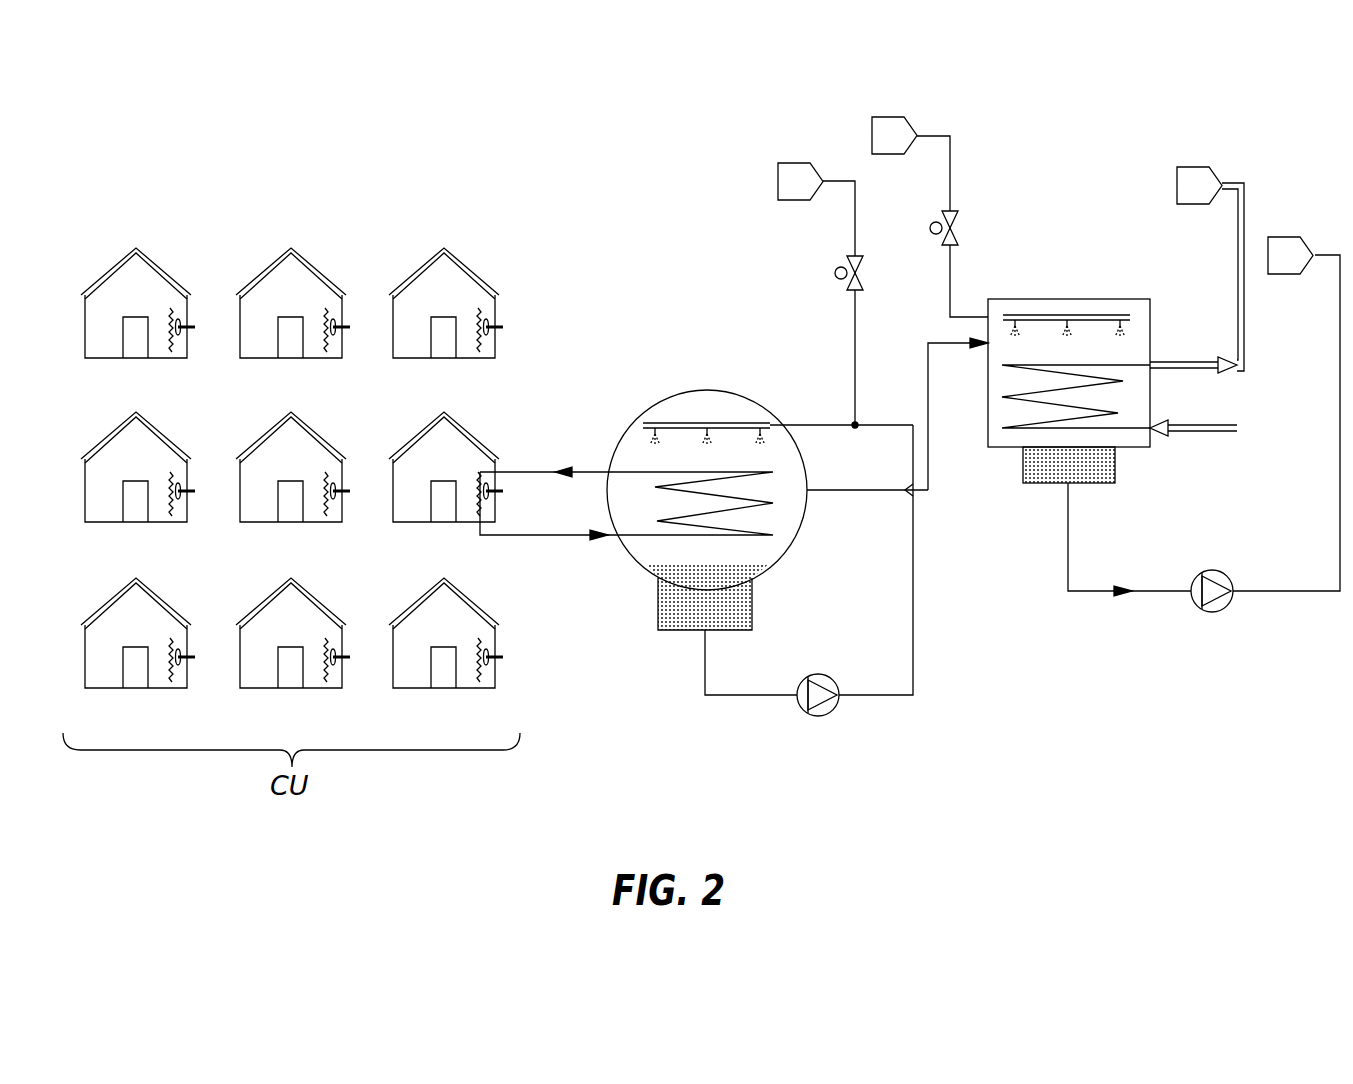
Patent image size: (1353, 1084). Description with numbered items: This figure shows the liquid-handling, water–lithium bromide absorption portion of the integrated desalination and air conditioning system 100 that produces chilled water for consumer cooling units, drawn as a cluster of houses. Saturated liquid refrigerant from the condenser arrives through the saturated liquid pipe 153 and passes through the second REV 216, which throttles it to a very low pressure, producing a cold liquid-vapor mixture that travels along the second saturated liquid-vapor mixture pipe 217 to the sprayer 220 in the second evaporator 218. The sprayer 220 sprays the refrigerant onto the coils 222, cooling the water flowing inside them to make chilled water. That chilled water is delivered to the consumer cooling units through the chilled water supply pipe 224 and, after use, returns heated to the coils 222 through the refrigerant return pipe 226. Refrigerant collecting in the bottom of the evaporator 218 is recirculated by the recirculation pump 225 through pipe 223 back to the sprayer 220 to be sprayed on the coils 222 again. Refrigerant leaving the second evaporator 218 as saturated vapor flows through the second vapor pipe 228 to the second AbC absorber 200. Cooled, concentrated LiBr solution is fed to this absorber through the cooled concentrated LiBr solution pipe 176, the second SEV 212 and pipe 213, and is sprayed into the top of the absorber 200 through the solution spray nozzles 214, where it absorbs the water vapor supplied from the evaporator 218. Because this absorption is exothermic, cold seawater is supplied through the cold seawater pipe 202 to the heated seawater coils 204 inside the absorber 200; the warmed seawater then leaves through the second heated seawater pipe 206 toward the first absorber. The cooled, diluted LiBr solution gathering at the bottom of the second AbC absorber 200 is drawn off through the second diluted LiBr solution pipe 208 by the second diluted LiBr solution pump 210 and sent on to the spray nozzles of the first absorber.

The integrated system 100 is at (302, 132).
The saturated liquid pipe 153 is at (855, 208).
The cooled concentrated LiBr solution pipe 176 is at (950, 172).
The second AbC absorber 200 is at (1150, 300).
The cold seawater pipe 202 is at (1195, 424).
The heated seawater coils 204 is at (990, 397).
The second heated seawater pipe 206 is at (1185, 360).
The second diluted LiBr solution pipe 208 is at (1068, 595).
The second diluted LiBr solution pump 210 is at (1212, 613).
The second SEV (solution expansion valve) 212 is at (962, 228).
The pipe 213 is at (950, 280).
The solution spray nozzles 214 is at (1074, 313).
The second REV 216 is at (835, 258).
The second saturated liquid-vapor mixture pipe 217 is at (858, 352).
The second evaporator 218 is at (678, 388).
The sprayer 220 is at (720, 430).
The coils 222 is at (757, 508).
The pipe 223 is at (915, 582).
The chilled water supply pipe 224 is at (525, 470).
The recirculation pump 225 is at (835, 710).
The refrigerant return pipe 226 is at (550, 537).
The second vapor pipe 228 is at (865, 493).